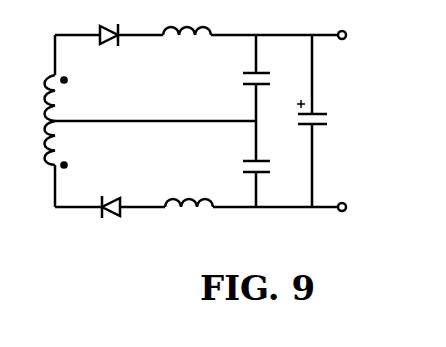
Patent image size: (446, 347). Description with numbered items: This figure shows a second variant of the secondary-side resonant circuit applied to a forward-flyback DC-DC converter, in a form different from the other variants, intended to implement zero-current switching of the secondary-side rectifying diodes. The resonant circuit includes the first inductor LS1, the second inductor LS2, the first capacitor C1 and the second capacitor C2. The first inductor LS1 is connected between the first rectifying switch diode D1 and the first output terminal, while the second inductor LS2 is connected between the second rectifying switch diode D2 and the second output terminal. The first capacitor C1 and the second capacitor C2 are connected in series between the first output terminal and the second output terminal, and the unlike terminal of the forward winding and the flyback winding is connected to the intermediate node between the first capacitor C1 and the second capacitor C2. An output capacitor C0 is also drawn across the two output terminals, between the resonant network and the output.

The first rectifying switch diode D1 is at (116, 49).
The second rectifying switch diode D2 is at (119, 193).
The first inductor LS1 is at (187, 51).
The second inductor LS2 is at (189, 185).
The first capacitor C1 is at (269, 78).
The second capacitor C2 is at (264, 164).
The output capacitor C0 is at (302, 121).